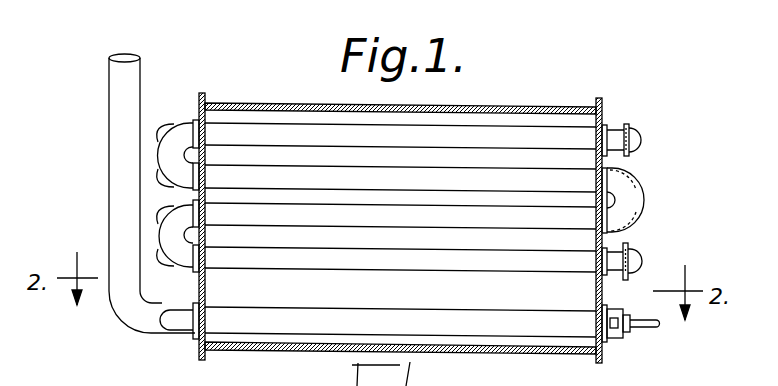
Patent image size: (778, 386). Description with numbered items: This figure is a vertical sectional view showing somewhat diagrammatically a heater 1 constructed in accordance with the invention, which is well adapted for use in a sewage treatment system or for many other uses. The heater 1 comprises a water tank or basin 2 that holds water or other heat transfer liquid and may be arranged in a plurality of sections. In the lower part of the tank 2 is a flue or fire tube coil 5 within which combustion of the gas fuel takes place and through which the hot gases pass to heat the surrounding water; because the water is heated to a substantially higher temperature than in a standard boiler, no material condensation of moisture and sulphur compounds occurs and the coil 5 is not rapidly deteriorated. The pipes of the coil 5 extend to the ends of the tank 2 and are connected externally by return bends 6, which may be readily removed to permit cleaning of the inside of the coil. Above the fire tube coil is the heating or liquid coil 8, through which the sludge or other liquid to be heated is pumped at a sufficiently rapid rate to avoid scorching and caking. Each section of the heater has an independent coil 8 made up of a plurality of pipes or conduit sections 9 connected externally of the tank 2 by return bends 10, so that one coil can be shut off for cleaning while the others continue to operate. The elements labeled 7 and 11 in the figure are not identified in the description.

The heater 1 is at (535, 357).
The water tank or basin 2 is at (313, 350).
The flue or fire tube coil 5 is at (284, 318).
The return bends 6 is at (180, 318).
The inlet pipe 7 is at (127, 203).
The heating or liquid coil 8 is at (506, 130).
The pipes or conduit sections 9 is at (527, 255).
The return bends 10 is at (639, 262).
The outlet fitting 11 is at (620, 346).